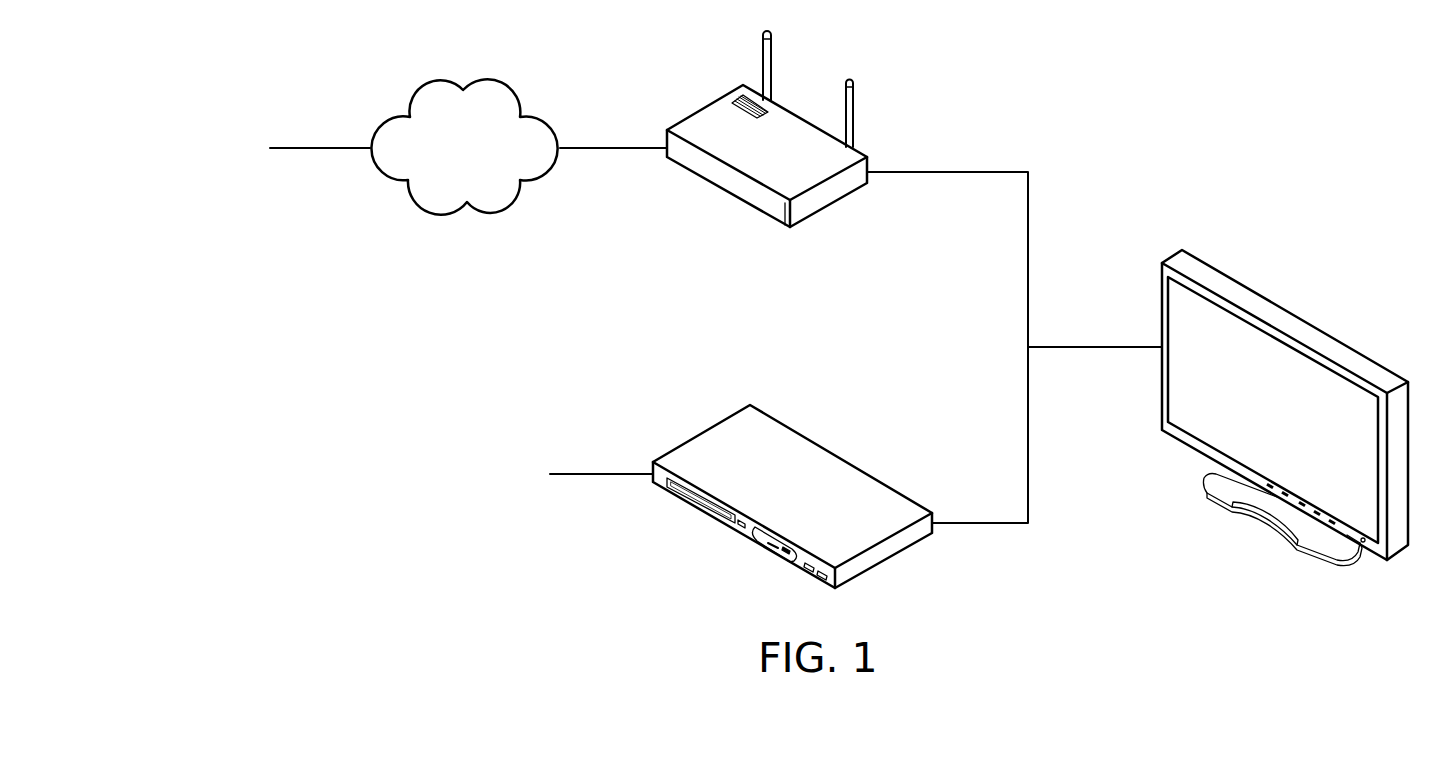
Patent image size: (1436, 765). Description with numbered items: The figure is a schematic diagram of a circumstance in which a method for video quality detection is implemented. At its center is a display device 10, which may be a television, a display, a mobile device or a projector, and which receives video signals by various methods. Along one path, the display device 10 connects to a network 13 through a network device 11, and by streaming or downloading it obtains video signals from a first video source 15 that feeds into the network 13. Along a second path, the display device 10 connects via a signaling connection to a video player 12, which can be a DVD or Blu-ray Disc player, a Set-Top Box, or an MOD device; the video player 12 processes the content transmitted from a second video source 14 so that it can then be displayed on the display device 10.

The display device 10 is at (1297, 313).
The network device 11 is at (810, 117).
The video player 12 is at (843, 458).
The network 13 is at (467, 90).
The second video source 14 is at (457, 458).
The first video source 15 is at (172, 132).